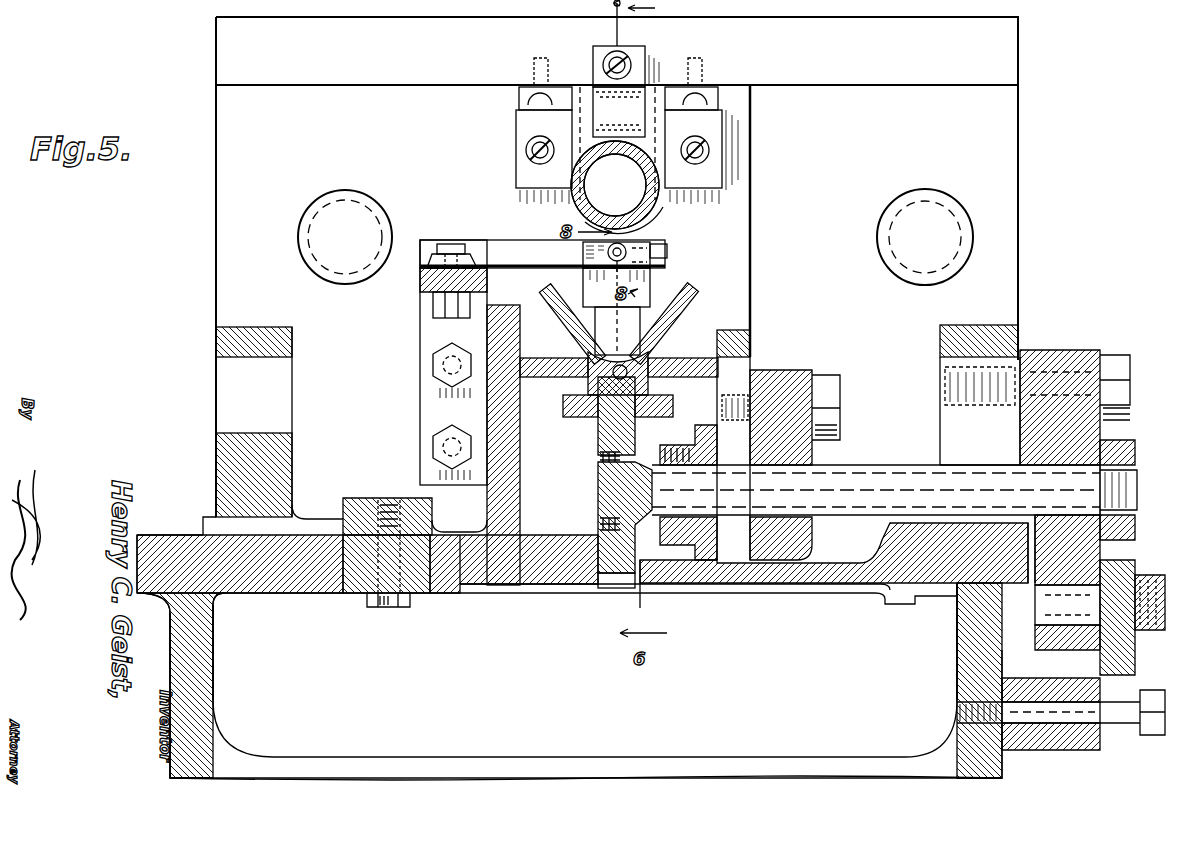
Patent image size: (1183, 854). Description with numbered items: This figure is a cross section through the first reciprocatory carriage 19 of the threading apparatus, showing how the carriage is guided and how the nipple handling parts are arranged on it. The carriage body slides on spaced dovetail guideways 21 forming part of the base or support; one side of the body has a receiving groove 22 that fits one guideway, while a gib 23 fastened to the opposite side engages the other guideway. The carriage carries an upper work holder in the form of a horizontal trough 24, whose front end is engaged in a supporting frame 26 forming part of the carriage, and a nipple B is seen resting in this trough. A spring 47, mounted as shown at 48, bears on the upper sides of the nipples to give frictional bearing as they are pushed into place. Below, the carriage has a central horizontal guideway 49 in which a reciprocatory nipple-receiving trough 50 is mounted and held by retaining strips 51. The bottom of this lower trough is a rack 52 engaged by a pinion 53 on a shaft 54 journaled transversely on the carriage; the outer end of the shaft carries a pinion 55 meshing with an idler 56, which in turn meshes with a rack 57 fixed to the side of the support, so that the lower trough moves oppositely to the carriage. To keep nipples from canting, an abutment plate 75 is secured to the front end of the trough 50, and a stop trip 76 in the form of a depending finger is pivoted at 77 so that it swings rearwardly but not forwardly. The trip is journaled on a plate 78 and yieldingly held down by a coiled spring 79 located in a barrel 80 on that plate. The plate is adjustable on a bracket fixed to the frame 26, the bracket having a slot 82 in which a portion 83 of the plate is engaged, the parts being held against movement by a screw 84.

The reciprocatory carriage 19 is at (217, 207).
The guideways 21 is at (335, 578).
The receiving groove 22 is at (920, 583).
The gib 23 is at (413, 582).
The horizontal trough 24 is at (658, 200).
The supporting frame 26 is at (752, 245).
The spring 47 is at (598, 100).
The spring mounting 48 is at (622, 52).
The central horizontal guideway 49 is at (556, 399).
The nipple-receiving trough 50 is at (696, 292).
The retaining strips 51 is at (553, 358).
The rack 52 is at (600, 425).
The pinion 53 is at (602, 462).
The shaft 54 is at (880, 458).
The pinion 55 is at (1118, 446).
The idler 56 is at (1135, 580).
The rack 57 is at (1095, 688).
The abutment plate 75 is at (600, 318).
The stop trip 76 is at (585, 285).
The pivot 77 is at (667, 251).
The plate 78 is at (522, 245).
The coiled spring 79 is at (630, 258).
The barrel 80 is at (627, 248).
The slot 82 is at (468, 265).
The portion 83 is at (425, 282).
The screw 84 is at (440, 313).
The nipple B is at (648, 190).